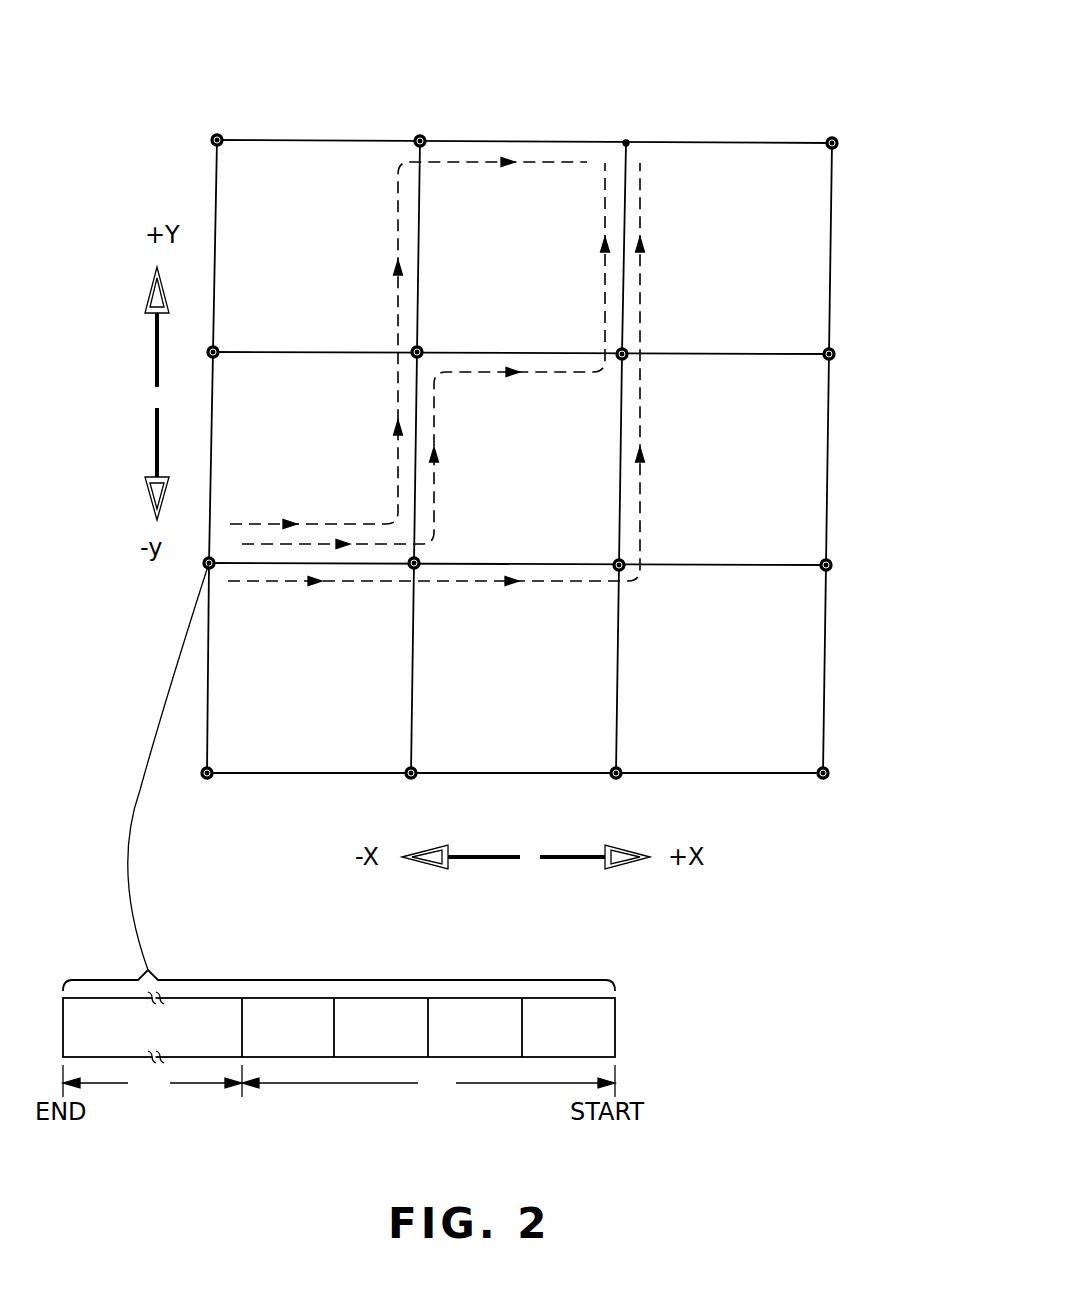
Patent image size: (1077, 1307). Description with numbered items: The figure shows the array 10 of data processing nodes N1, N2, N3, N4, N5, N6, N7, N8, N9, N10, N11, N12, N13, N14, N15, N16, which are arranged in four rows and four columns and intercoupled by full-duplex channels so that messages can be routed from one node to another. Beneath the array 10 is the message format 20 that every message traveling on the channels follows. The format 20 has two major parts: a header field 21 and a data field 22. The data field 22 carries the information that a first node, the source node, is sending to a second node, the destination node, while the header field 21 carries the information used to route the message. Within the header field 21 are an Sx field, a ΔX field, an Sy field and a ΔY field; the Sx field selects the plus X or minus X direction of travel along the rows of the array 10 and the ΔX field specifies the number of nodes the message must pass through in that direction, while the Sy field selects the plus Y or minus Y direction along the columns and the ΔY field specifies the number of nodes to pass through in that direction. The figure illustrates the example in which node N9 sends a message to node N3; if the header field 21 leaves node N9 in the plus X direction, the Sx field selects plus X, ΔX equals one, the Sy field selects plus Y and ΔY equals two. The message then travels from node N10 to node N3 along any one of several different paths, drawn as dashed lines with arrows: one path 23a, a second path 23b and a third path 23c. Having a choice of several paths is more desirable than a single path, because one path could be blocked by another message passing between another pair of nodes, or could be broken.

The array 10 is at (797, 47).
The data processing node N1 is at (217, 140).
The data processing node N2 is at (420, 141).
The data processing node N3 is at (644, 128).
The data processing node N4 is at (832, 143).
The data processing node N5 is at (213, 352).
The data processing node N6 is at (417, 352).
The data processing node N7 is at (622, 354).
The data processing node N8 is at (829, 354).
The data processing node N9 is at (209, 563).
The data processing node N10 is at (414, 563).
The data processing node N11 is at (619, 565).
The data processing node N12 is at (826, 565).
The data processing node N13 is at (207, 773).
The data processing node N14 is at (411, 773).
The data processing node N15 is at (616, 773).
The data processing node N16 is at (823, 773).
The path 23a is at (436, 410).
The path 23b is at (397, 405).
The path 23c is at (465, 582).
The message format 20 is at (127, 866).
The header field 21 is at (428, 1082).
The data field 22 is at (152, 1081).